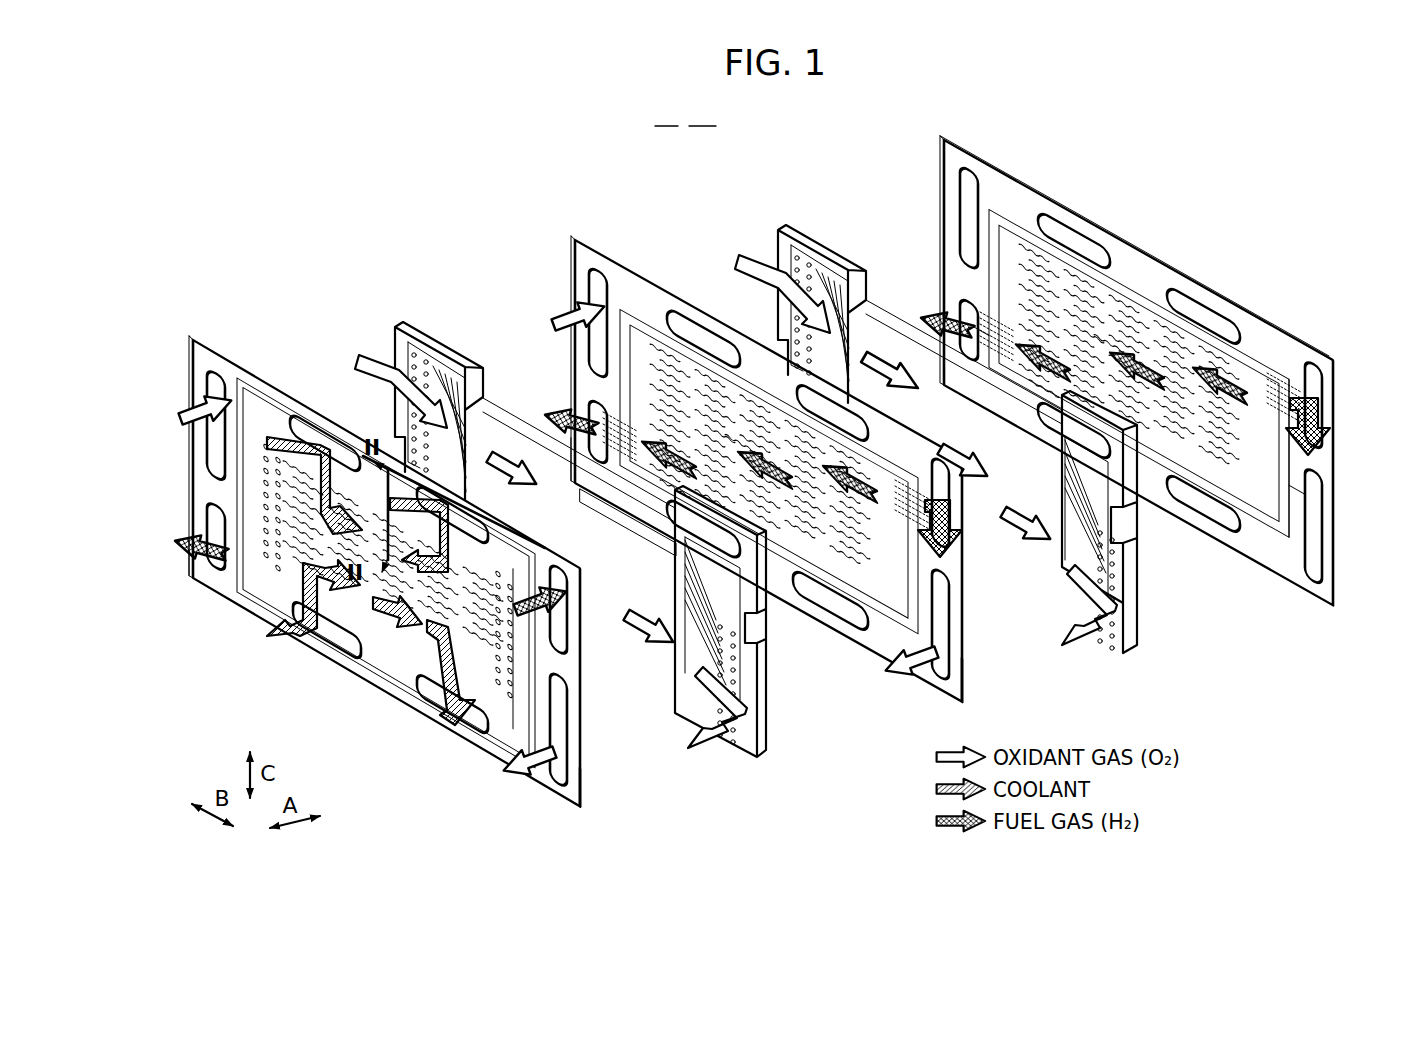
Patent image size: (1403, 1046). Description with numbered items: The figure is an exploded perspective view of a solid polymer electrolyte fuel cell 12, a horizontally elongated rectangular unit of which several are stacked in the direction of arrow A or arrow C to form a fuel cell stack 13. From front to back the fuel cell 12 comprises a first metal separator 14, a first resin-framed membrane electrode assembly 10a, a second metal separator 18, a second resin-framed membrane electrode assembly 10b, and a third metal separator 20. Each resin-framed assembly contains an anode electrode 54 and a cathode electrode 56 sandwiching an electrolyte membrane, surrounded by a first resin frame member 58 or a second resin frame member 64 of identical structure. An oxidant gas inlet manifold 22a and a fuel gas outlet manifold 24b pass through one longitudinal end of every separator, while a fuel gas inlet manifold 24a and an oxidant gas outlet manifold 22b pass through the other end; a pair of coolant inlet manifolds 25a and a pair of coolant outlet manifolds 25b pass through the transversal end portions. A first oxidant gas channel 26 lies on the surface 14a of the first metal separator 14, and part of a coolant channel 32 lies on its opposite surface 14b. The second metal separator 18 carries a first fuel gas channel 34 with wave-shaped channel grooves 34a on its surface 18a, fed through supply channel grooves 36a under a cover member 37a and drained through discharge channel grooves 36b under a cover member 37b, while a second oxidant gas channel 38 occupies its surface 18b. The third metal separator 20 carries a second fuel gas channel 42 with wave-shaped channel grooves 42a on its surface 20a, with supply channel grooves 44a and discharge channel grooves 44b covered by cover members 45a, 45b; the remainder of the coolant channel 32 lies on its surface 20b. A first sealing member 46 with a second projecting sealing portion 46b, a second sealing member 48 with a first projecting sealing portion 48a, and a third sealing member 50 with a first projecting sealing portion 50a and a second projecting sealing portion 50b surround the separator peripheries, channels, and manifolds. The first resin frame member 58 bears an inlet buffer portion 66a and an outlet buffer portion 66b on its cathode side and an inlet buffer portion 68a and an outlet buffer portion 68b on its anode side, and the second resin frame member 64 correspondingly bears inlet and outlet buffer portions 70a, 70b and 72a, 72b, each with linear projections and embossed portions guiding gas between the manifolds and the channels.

The first resin-framed membrane electrode assembly 10a is at (397, 324).
The second resin-framed membrane electrode assembly 10b is at (780, 228).
The fuel cell 12 is at (667, 113).
The fuel cell stack 13 is at (702, 113).
The first metal separator 14 is at (197, 337).
The surface of the first metal separator 14a is at (586, 764).
The surface of the first metal separator 14b is at (584, 797).
The second metal separator 18 is at (578, 238).
The surface of the second metal separator 18a is at (966, 694).
The surface of the second metal separator 18b is at (968, 661).
The third metal separator 20 is at (940, 148).
The surface of the third metal separator 20a is at (1129, 258).
The surface of the third metal separator 20b is at (1161, 265).
The oxidant gas inlet manifold 22a is at (217, 386).
The oxidant gas outlet manifold 22b is at (567, 701).
The fuel gas inlet manifold 24a is at (570, 609).
The fuel gas outlet manifold 24b is at (219, 575).
The coolant inlet manifolds 25a is at (477, 534).
The coolant outlet manifolds 25b is at (456, 702).
The first oxidant gas channel 26 is at (499, 640).
The coolant channel 32 is at (474, 660).
The first fuel gas channel 34 is at (702, 492).
The wave-shaped channel grooves 34a is at (739, 396).
The supply channel grooves 36a is at (869, 470).
The discharge channel grooves 36b is at (640, 479).
The cover member 37a is at (905, 525).
The cover member 37b is at (645, 400).
The second oxidant gas channel 38 is at (690, 528).
The second fuel gas channel 42 is at (1174, 333).
The wave-shaped channel grooves 42a is at (1131, 338).
The supply channel grooves 44a is at (1251, 370).
The discharge channel grooves 44b is at (1008, 400).
The cover member 45a is at (1266, 388).
The cover member 45b is at (1004, 332).
The first sealing member 46 is at (334, 422).
The second projecting sealing portion 46b is at (270, 412).
The second sealing member 48 is at (689, 300).
The first projecting sealing portion 48a is at (641, 302).
The third sealing member 50 is at (1066, 205).
The first projecting sealing portion 50a is at (1023, 215).
The second projecting sealing portion 50b is at (1313, 525).
The anode electrode 54 is at (531, 410).
The cathode electrode 56 is at (498, 450).
The first resin frame member 58 is at (756, 714).
The second resin frame member 64 is at (1126, 628).
The inlet buffer portion 66a is at (456, 388).
The outlet buffer portion 66b is at (719, 590).
The inlet buffer portion 68a is at (752, 566).
The outlet buffer portion 68b is at (488, 400).
The inlet buffer portion 70a is at (841, 284).
The outlet buffer portion 70b is at (1093, 478).
The inlet buffer portion 72a is at (1145, 497).
The outlet buffer portion 72b is at (871, 290).